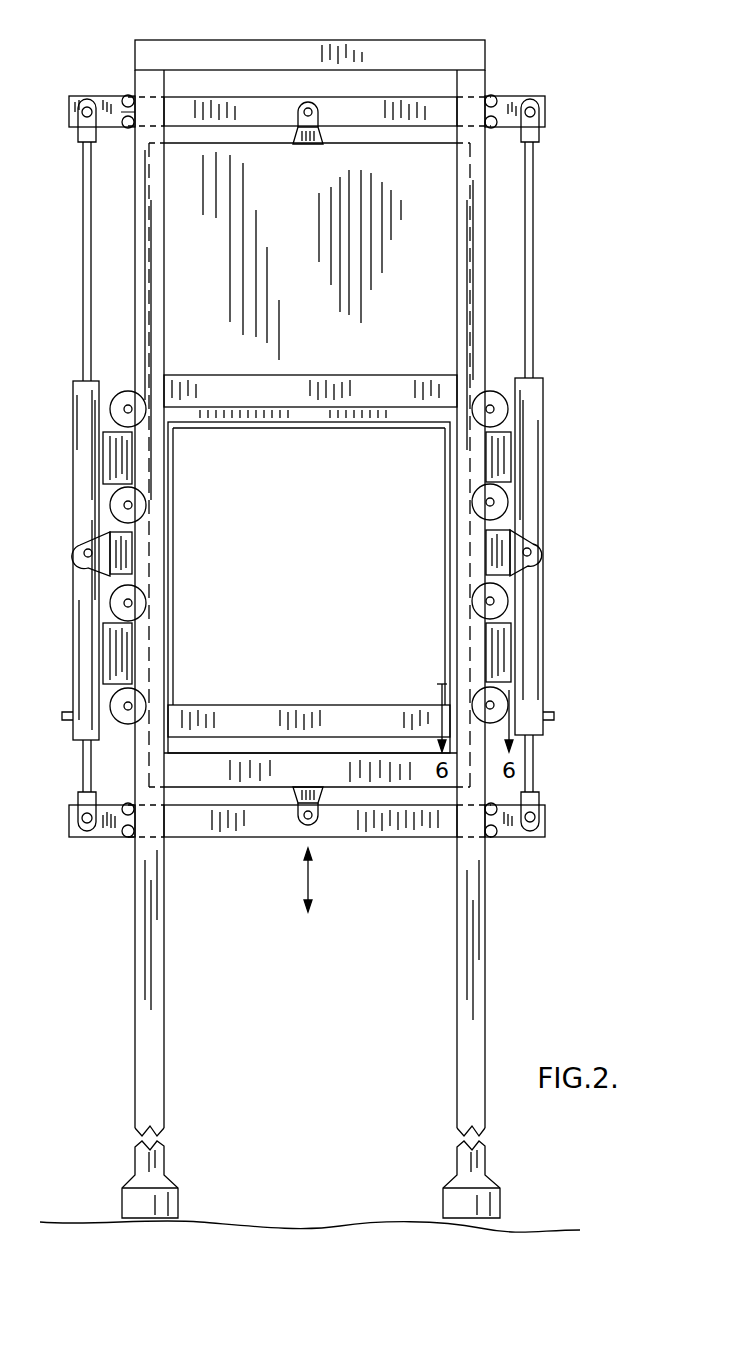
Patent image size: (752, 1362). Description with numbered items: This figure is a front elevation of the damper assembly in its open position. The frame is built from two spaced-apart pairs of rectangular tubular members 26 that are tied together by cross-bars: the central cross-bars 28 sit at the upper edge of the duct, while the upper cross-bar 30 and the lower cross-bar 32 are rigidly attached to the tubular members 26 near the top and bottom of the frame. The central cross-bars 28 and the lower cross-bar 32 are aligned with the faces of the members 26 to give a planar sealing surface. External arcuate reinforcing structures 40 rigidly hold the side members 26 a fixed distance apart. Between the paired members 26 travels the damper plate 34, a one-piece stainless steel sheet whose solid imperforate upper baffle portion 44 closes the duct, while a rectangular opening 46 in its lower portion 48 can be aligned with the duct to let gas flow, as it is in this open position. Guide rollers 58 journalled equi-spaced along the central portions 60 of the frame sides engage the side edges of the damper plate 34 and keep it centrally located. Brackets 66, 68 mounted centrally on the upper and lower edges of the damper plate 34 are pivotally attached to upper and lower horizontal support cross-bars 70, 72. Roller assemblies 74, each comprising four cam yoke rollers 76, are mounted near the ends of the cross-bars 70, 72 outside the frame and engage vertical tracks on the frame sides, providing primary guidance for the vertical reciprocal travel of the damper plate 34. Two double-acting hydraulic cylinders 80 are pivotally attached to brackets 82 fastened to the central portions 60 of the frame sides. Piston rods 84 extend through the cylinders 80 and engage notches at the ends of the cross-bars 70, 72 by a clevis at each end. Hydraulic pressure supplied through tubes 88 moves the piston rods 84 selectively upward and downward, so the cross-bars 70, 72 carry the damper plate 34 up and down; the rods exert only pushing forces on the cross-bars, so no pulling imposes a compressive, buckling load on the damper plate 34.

The tubular members 26 is at (140, 940).
The central cross-bars 28 is at (440, 372).
The upper cross-bar 30 is at (232, 53).
The lower cross-bar 32 is at (415, 715).
The damper plate 34 is at (446, 231).
The external arcuate reinforcing structures 40 is at (108, 452).
The upper baffle portion 44 is at (420, 301).
The rectangular opening 46 is at (259, 672).
The lower portion 48 is at (476, 586).
The guide rollers 58 is at (116, 402).
The central portions 60 is at (137, 572).
The bracket 66 is at (299, 118).
The bracket 68 is at (320, 806).
The upper horizontal support cross-bar 70 is at (407, 99).
The lower horizontal support cross-bar 72 is at (205, 830).
The roller assemblies 74 is at (118, 99).
The cam yoke rollers 76 is at (127, 127).
The double-acting hydraulic cylinders 80 is at (73, 525).
The brackets 82 is at (95, 545).
The piston rods 84 is at (86, 245).
The tubes 88 is at (66, 713).